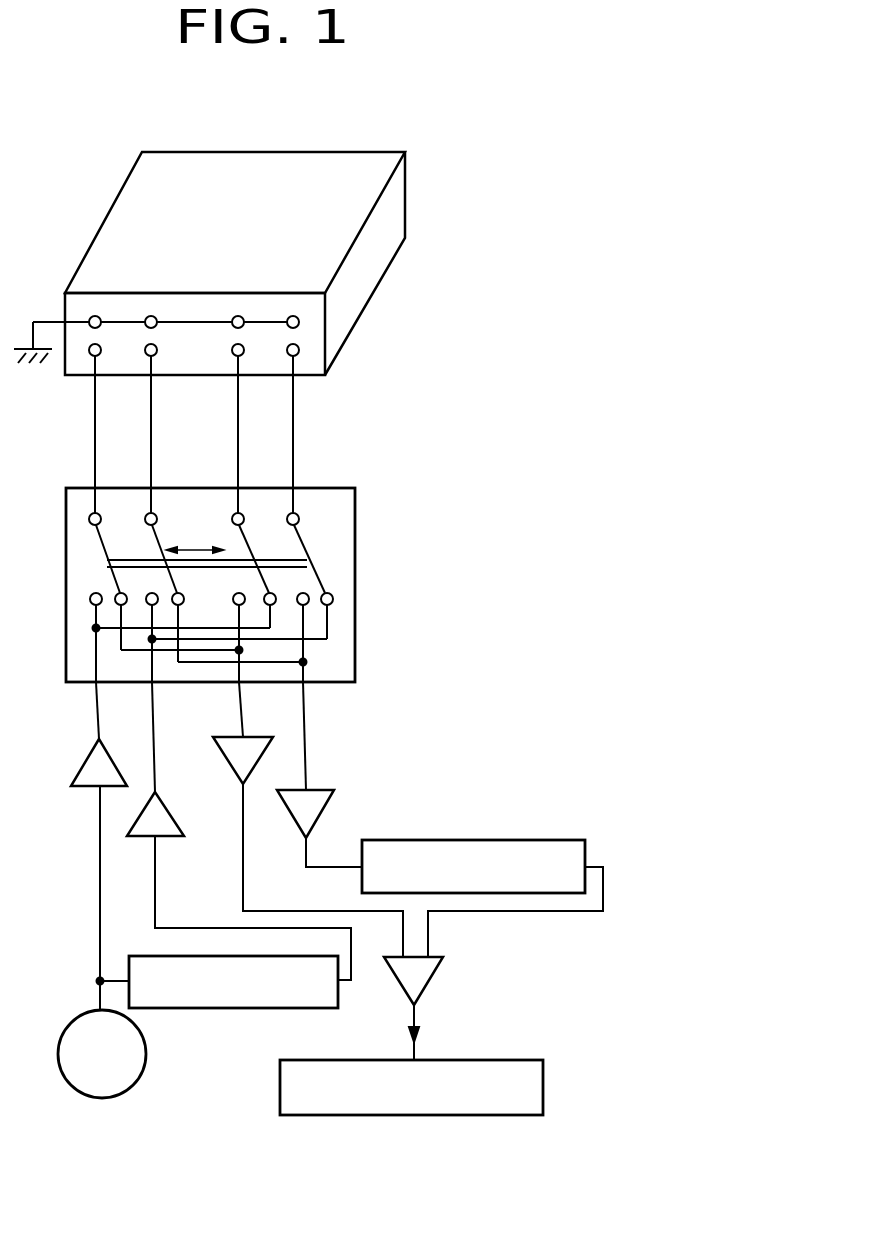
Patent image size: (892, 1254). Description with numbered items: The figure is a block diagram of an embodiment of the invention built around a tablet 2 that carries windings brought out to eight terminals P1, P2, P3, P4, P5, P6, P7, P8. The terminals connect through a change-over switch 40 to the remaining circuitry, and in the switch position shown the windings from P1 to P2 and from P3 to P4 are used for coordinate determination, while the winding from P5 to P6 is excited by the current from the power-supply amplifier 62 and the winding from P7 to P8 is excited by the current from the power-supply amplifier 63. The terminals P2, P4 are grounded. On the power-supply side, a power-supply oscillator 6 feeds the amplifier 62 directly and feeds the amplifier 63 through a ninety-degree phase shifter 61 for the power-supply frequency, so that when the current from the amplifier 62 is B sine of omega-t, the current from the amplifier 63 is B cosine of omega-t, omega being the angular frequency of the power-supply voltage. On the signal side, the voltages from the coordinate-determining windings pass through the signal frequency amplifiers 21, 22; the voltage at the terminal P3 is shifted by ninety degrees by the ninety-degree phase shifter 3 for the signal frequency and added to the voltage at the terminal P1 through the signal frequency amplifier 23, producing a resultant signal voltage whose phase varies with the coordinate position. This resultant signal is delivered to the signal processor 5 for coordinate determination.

The tablet 2 is at (380, 160).
The terminal P1 is at (90, 354).
The terminal P2 is at (99, 317).
The terminal P3 is at (153, 356).
The terminal P4 is at (155, 317).
The terminal P5 is at (236, 356).
The terminal P6 is at (241, 317).
The terminal P7 is at (294, 356).
The terminal P8 is at (299, 321).
The change-over switch 40 is at (355, 556).
The power-supply amplifier 62 is at (83, 787).
The power-supply amplifier 63 is at (140, 837).
The signal frequency amplifier 21 is at (227, 760).
The signal frequency amplifier 22 is at (325, 805).
The signal frequency amplifier 23 is at (437, 970).
The 90° phase shifter for the signal frequency 3 is at (508, 840).
The 90° phase shifter for the power-supply frequency 61 is at (193, 1008).
The signal processor 5 is at (543, 1090).
The power-supply oscillator 6 is at (61, 1077).